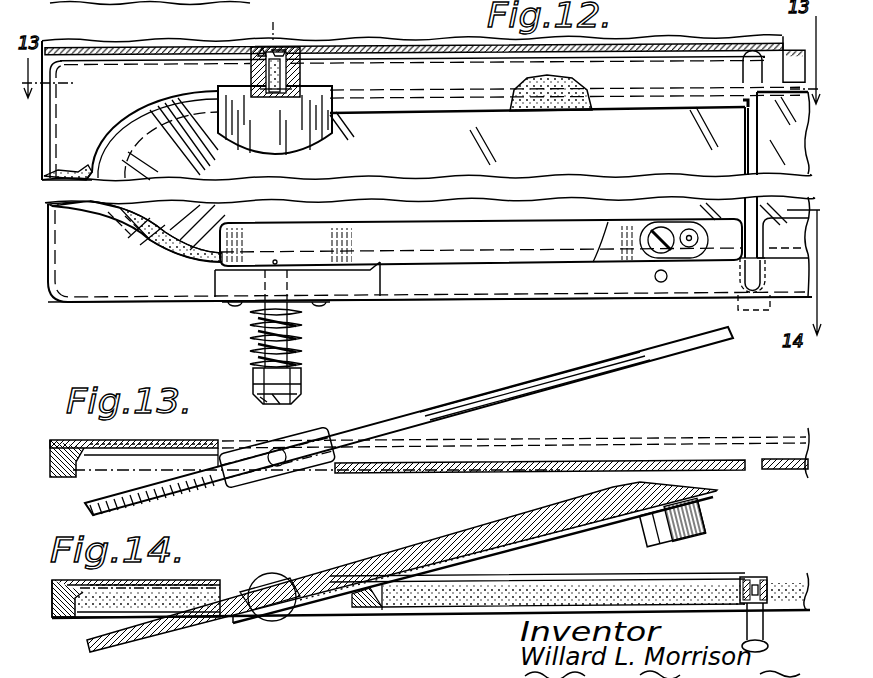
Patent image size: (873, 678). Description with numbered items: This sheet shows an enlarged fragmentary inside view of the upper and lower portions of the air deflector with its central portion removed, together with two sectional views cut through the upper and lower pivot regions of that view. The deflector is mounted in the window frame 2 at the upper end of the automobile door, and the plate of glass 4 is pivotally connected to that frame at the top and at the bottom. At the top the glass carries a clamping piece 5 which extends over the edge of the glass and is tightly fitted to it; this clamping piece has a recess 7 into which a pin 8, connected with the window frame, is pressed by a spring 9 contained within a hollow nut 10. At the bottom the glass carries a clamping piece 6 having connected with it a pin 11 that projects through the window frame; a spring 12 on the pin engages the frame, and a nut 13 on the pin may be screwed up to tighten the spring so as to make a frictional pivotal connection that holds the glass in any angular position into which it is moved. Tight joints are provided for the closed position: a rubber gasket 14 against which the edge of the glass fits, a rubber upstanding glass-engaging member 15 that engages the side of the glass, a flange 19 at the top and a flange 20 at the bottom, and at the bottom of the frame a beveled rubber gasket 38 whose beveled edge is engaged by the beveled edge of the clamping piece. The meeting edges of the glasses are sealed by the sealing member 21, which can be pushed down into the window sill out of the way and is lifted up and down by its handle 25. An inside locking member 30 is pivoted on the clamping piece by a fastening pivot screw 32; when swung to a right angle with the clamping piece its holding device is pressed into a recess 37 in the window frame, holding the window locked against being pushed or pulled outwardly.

In FIG. 12, the upper end of the door / window frame 2 is at (555, 292).
In FIG. 12, the plate of glass 4 is at (550, 158).
In FIG. 13, the plate of glass 4 is at (447, 407).
In FIG. 14, the plate of glass 4 is at (455, 548).
In FIG. 12, the clamping piece 5 is at (329, 137).
In FIG. 13, the clamping piece 5 is at (313, 433).
In FIG. 12, the clamping piece 6 is at (444, 246).
In FIG. 14, the clamping piece 6 is at (385, 556).
In FIG. 12, the recess 7 is at (282, 94).
In FIG. 13, the recess 7 is at (279, 465).
In FIG. 12, the pin 8 is at (299, 78).
In FIG. 12, the spring 9 is at (280, 50).
In FIG. 12, the hollow nut 10 is at (265, 48).
In FIG. 12, the pin 11 is at (301, 396).
In FIG. 12, the spring 12 is at (303, 353).
In FIG. 14, the spring 12 is at (278, 576).
In FIG. 12, the nut 13 is at (254, 383).
In FIG. 12, the rubber gasket 14 is at (33, 188).
In FIG. 13, the rubber gasket 14 is at (61, 477).
In FIG. 14, the rubber gasket 14 is at (65, 617).
In FIG. 12, the upstanding glass-engaging member 15 is at (146, 222).
In FIG. 13, the upstanding glass-engaging member 15 is at (183, 440).
In FIG. 14, the upstanding glass-engaging member 15 is at (183, 590).
In FIG. 12, the flange 19 is at (657, 102).
In FIG. 13, the flange 19 is at (465, 475).
In FIG. 12, the flange 20 is at (607, 222).
In FIG. 14, the flange 20 is at (662, 608).
In FIG. 12, the sealing member 21 is at (770, 306).
In FIG. 14, the sealing member 21 is at (764, 578).
In FIG. 12, the handle 25 is at (738, 288).
In FIG. 14, the handle 25 is at (766, 645).
In FIG. 12, the locking member 30 is at (689, 229).
In FIG. 14, the locking member 30 is at (676, 548).
In FIG. 12, the fastening pivot screw 32 is at (658, 228).
In FIG. 12, the recess 37 is at (657, 283).
In FIG. 14, the beveled rubber gasket 38 is at (620, 585).